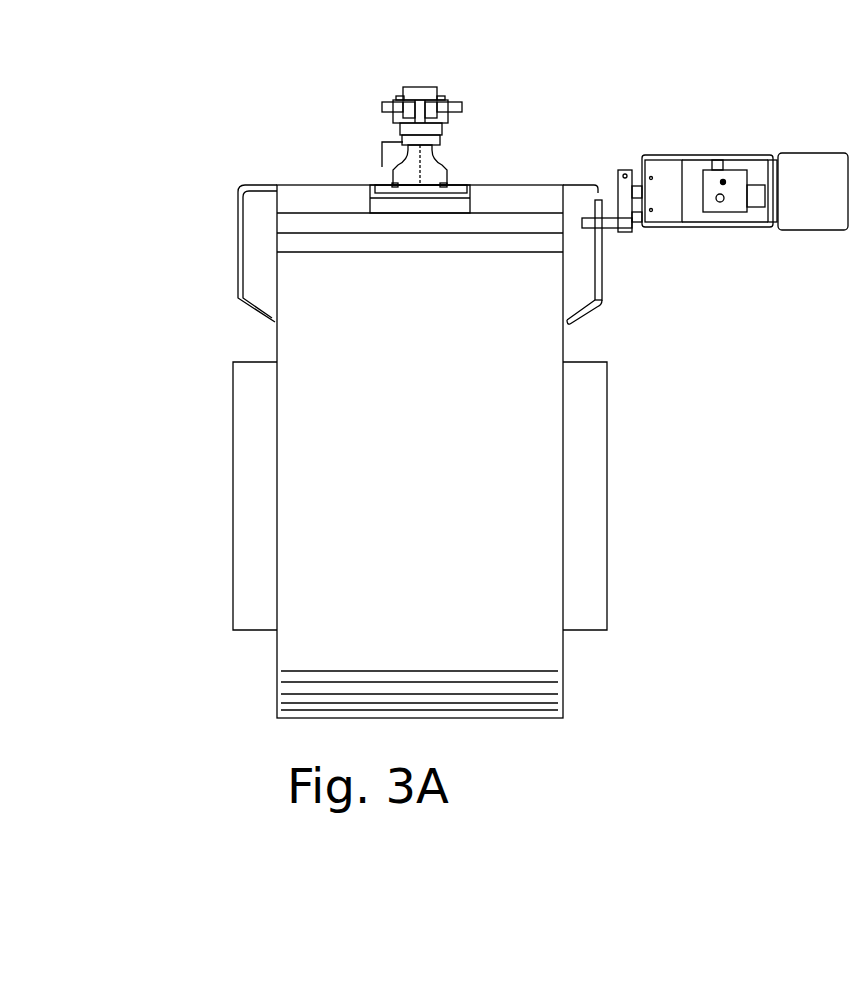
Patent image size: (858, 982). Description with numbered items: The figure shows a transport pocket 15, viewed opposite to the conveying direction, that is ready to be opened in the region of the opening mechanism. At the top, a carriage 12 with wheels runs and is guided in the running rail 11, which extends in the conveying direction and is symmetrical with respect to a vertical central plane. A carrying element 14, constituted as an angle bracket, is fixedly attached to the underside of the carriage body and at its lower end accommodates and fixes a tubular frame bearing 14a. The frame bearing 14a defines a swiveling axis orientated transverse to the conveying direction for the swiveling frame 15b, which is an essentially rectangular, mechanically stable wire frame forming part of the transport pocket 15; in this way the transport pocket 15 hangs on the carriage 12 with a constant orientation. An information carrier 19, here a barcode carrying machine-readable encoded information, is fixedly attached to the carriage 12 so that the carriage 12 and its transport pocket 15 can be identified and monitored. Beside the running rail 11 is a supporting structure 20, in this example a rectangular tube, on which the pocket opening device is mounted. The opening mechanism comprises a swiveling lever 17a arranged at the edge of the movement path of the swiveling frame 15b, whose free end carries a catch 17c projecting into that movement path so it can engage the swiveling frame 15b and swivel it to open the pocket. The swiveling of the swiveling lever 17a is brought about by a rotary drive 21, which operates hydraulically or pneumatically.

The running rail 11 is at (413, 85).
The carriage 12 is at (417, 100).
The carrying element 14 is at (438, 160).
The frame bearing 14a is at (463, 187).
The transport pocket 15 is at (445, 479).
The swiveling frame 15b is at (593, 305).
The swiveling lever 17a is at (626, 165).
The catch 17c is at (600, 225).
The information carrier 19 is at (370, 147).
The supporting structure 20 is at (816, 160).
The rotary drive 21 is at (668, 180).